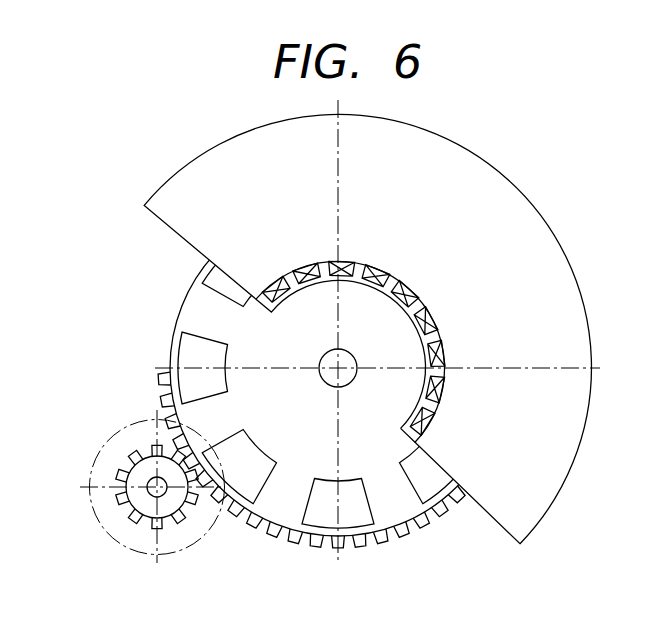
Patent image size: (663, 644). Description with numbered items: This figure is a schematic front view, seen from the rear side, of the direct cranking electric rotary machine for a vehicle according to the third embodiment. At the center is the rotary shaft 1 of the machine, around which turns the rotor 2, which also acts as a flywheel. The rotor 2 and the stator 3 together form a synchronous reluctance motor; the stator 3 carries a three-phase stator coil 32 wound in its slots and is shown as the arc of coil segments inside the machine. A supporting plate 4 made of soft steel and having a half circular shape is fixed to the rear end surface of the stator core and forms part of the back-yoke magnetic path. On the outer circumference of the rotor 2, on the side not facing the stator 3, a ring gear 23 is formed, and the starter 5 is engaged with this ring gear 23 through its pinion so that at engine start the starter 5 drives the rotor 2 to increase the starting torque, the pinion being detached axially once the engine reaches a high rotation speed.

The rotary shaft 1 is at (341, 374).
The rotor 2 is at (332, 410).
The ring gear 23 is at (292, 543).
The stator 3 is at (350, 351).
The stator coil 32 is at (331, 271).
The supporting plate 4 is at (497, 190).
The starter 5 is at (112, 433).